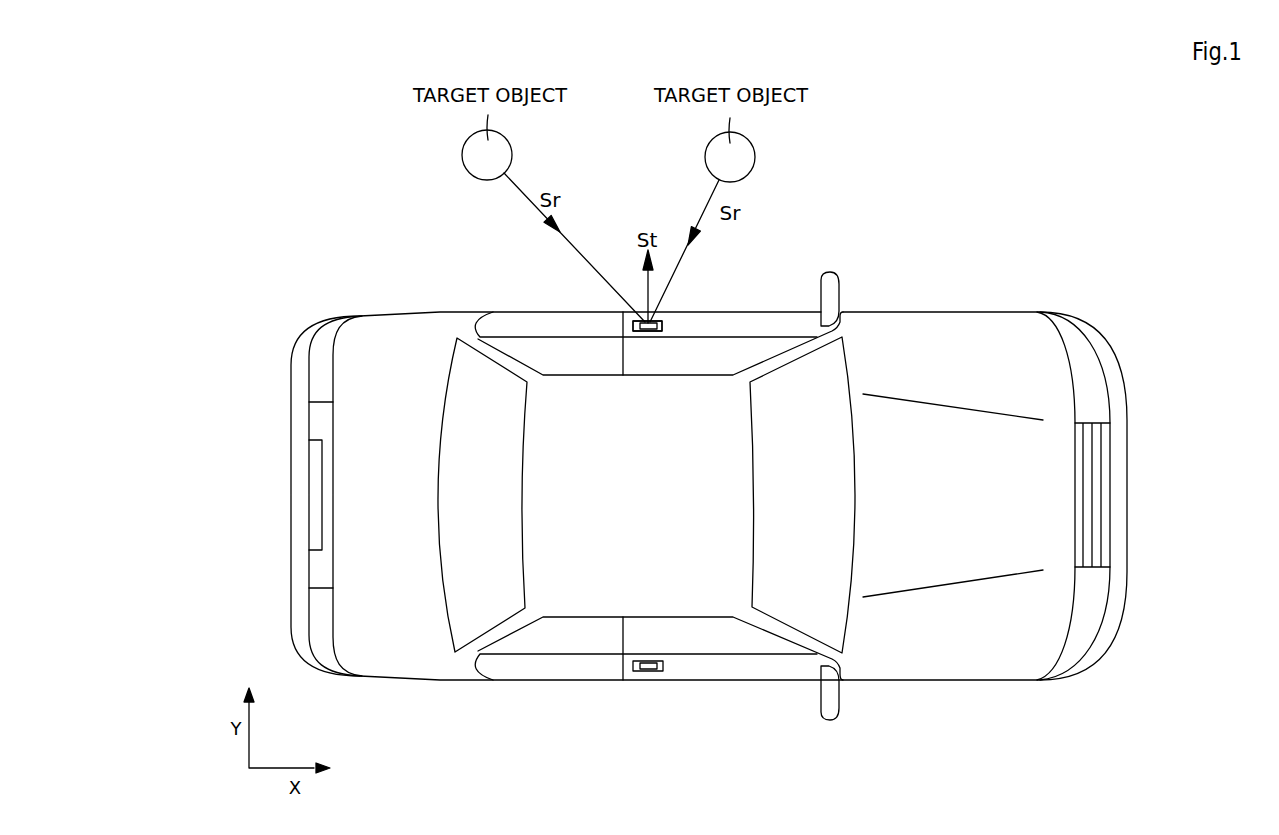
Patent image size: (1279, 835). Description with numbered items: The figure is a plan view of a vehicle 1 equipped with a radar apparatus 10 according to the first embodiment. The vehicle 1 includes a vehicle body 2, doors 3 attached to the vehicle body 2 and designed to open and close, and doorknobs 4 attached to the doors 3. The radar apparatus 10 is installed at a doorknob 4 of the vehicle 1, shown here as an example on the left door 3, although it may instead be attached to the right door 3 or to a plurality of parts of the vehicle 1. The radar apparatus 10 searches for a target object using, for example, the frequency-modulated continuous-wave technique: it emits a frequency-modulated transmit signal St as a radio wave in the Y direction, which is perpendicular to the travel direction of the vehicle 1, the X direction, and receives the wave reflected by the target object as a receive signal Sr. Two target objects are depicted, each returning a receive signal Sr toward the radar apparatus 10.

The vehicle 1 is at (394, 278).
The vehicle body 2 is at (992, 330).
The door 3 is at (762, 323).
The doorknob 4 is at (663, 326).
The radar apparatus 10 is at (622, 325).